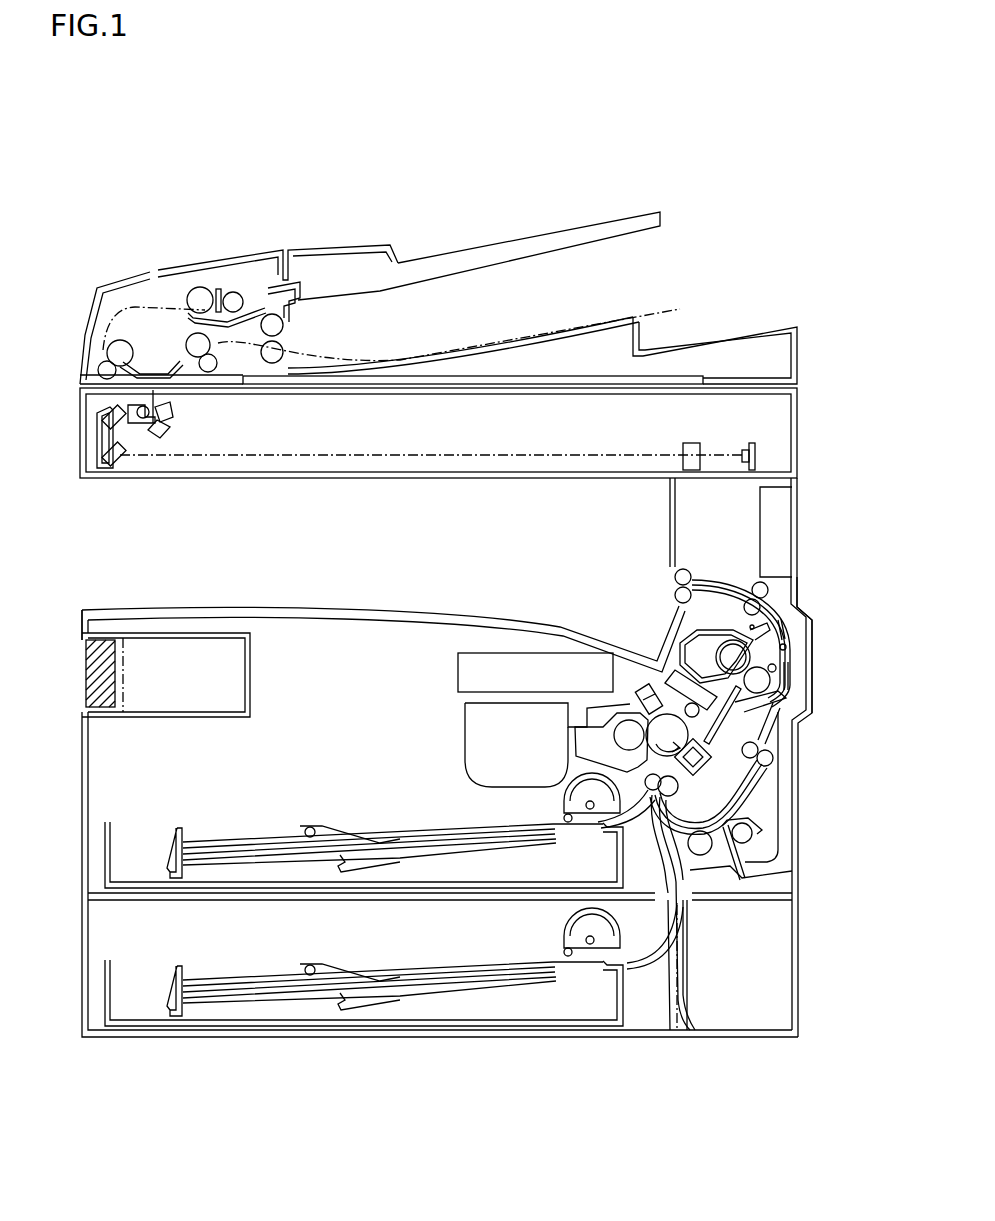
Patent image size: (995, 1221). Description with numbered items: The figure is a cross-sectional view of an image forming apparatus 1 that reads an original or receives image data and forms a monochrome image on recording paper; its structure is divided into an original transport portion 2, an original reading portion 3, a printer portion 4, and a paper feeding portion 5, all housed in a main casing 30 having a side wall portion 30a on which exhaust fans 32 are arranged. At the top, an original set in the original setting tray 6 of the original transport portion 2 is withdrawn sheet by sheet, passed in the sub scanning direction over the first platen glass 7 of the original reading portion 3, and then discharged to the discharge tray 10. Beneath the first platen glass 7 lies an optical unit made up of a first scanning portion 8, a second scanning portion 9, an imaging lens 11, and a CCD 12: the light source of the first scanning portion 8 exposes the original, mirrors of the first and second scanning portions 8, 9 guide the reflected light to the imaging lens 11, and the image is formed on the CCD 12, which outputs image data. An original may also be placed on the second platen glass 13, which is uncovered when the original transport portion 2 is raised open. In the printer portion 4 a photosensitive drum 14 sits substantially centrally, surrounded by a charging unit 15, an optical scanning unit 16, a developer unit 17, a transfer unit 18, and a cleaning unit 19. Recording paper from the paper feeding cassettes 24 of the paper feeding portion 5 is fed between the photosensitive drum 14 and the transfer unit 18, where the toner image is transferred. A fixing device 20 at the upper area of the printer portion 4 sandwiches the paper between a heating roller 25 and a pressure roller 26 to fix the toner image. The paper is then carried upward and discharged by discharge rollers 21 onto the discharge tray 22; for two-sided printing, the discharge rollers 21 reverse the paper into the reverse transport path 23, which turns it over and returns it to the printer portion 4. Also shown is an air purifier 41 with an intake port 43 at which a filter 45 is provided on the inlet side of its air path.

The image forming apparatus 1 is at (352, 167).
The original transport portion 2 is at (803, 345).
The original reading portion 3 is at (803, 427).
The printer portion 4 is at (818, 700).
The paper feeding portion 5 is at (66, 870).
The original setting tray 6 is at (455, 243).
The first platen glass 7 is at (173, 392).
The first scanning portion 8 is at (167, 434).
The second scanning portion 9 is at (97, 447).
The discharge tray 10 is at (552, 327).
The imaging lens 11 is at (688, 443).
The CCD 12 is at (755, 458).
The second platen glass 13 is at (470, 395).
The photosensitive drum 14 is at (679, 733).
The charging unit 15 is at (648, 684).
The optical scanning unit 16 is at (458, 673).
The developer unit 17 is at (468, 745).
The transfer unit 18 is at (708, 772).
The cleaning unit 19 is at (682, 670).
The fixing device 20 is at (732, 652).
The discharge rollers 21 is at (683, 568).
The discharge tray 22 is at (360, 610).
The reverse transport path 23 is at (780, 730).
The paper feeding cassettes 24 is at (150, 837).
The heating roller 25 is at (763, 679).
The pressure roller 26 is at (733, 597).
The main casing 30 is at (800, 965).
The side wall portion 30a is at (795, 590).
The exhaust fans 32 is at (780, 507).
The air purifier 41 is at (185, 722).
The intake port 43 is at (82, 632).
The filter 45 is at (95, 672).